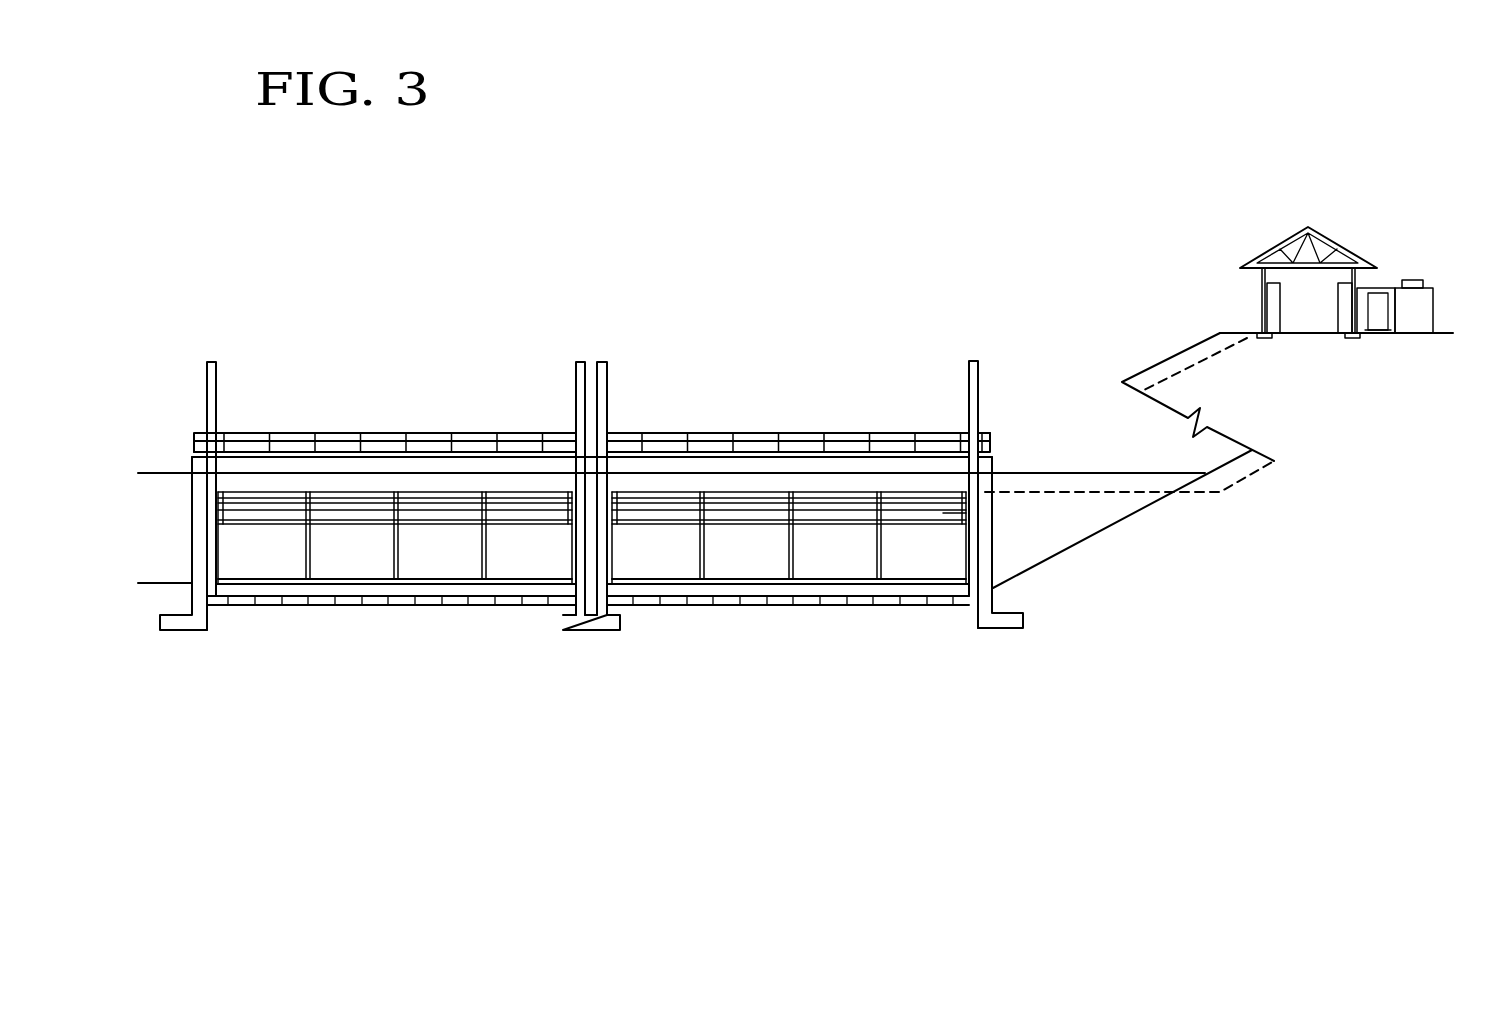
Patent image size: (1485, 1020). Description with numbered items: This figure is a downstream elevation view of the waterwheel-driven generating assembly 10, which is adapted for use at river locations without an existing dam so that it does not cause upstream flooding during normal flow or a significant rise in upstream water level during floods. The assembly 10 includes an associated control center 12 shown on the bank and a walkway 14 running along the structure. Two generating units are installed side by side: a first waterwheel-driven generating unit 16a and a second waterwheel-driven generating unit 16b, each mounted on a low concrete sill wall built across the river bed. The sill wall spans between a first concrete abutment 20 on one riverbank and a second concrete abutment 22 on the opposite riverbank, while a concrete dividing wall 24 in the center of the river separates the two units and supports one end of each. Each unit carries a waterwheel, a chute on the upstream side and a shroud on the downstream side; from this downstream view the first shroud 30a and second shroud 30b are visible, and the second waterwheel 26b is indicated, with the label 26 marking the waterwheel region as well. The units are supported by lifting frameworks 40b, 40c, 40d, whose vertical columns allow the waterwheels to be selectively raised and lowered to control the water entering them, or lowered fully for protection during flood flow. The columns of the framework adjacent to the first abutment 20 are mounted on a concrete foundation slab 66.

The waterwheel-driven generating assembly 10 is at (180, 375).
The control center 12 is at (1278, 245).
The walkway 14 is at (990, 437).
The first waterwheel-driven generating unit 16a is at (752, 428).
The second waterwheel-driven generating unit 16b is at (338, 430).
The first concrete abutment 20 is at (993, 522).
The second concrete abutment 22 is at (168, 632).
The concrete dividing wall 24 is at (610, 632).
The upper tank wall 26 is at (236, 497).
The second waterwheel 26b is at (943, 513).
The first shroud 30a is at (833, 565).
The second shroud 30b is at (283, 568).
The lifting framework 40b is at (217, 383).
The lifting framework 40c is at (607, 380).
The lifting framework 40d is at (576, 383).
The concrete foundation slab 66 is at (967, 608).